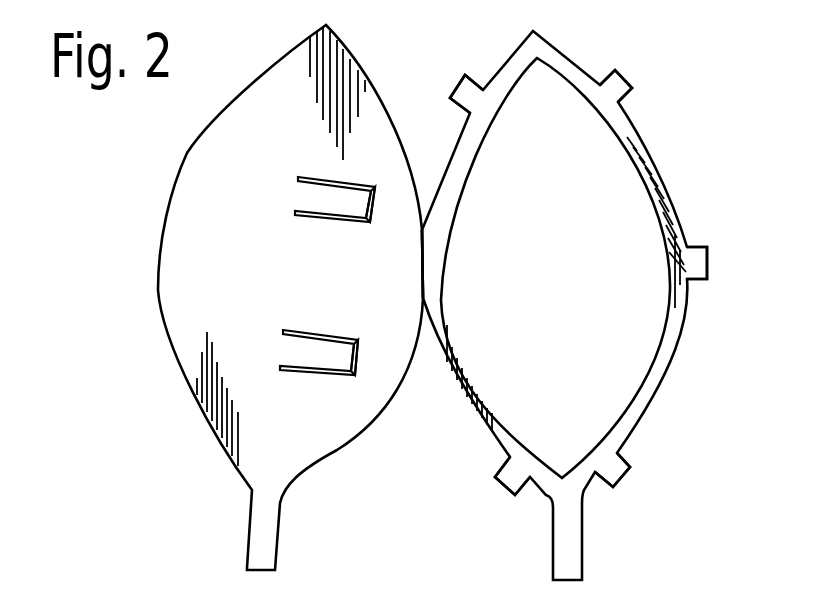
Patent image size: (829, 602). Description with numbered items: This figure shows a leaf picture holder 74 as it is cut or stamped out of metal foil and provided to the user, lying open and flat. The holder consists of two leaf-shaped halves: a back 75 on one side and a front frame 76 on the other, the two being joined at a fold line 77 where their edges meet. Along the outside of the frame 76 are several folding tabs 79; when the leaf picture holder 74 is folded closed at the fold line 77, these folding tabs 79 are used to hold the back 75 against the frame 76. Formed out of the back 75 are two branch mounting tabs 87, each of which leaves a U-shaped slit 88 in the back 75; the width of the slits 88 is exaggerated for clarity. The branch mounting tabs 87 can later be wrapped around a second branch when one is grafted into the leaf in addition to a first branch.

The leaf picture holder 74 is at (93, 146).
The back 75 is at (308, 429).
The front frame 76 is at (660, 361).
The fold line 77 is at (423, 190).
The folding tabs 79 is at (634, 92).
The branch mounting tabs 87 is at (298, 198).
The U-shaped slits 88 is at (357, 222).